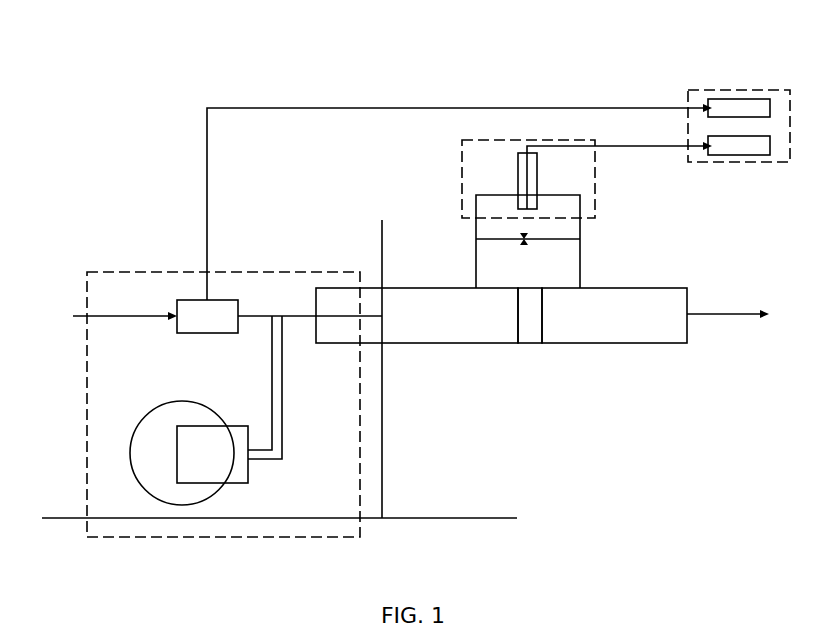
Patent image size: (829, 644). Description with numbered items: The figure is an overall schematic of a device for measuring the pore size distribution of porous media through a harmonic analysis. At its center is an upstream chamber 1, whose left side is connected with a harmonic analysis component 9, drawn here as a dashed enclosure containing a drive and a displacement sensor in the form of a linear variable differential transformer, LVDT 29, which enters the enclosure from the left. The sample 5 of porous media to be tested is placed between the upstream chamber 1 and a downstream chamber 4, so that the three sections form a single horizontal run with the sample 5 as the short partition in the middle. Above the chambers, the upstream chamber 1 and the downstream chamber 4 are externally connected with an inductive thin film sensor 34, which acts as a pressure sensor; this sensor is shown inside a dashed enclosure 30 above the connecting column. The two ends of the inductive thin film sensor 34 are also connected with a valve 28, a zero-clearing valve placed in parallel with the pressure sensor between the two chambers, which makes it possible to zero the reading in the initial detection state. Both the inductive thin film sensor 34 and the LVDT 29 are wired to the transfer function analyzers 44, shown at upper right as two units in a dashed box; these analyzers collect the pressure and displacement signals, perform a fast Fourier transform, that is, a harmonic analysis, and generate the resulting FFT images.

The upstream chamber 1 is at (464, 352).
The downstream chamber 4 is at (621, 352).
The sample 5 is at (532, 352).
The harmonic analysis component 9 is at (145, 264).
The valve 28 is at (540, 243).
The displacement sensor linear variable differential transformer (LVDT) 29 is at (101, 315).
The measuring unit 30 is at (566, 130).
The inductive thin film sensor 34 is at (523, 142).
The transfer function analyzers 44 is at (738, 80).